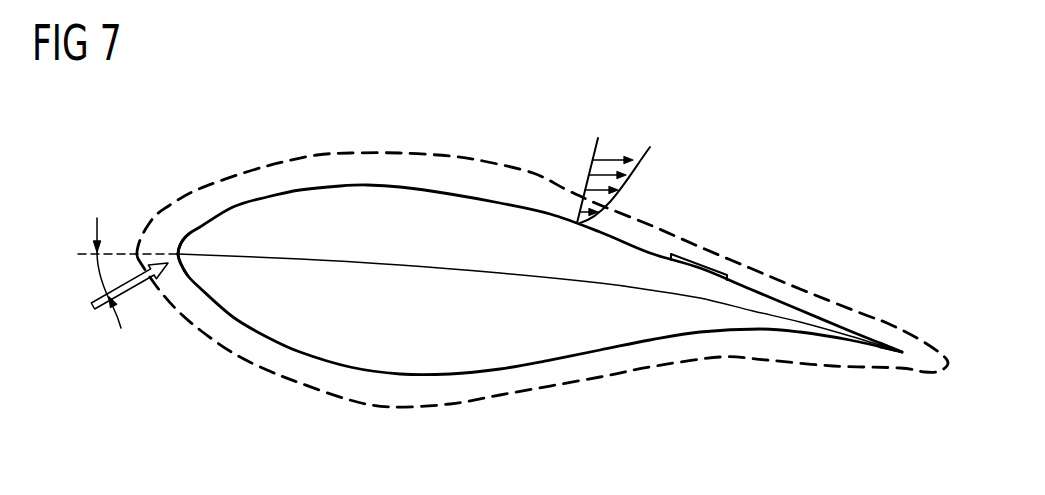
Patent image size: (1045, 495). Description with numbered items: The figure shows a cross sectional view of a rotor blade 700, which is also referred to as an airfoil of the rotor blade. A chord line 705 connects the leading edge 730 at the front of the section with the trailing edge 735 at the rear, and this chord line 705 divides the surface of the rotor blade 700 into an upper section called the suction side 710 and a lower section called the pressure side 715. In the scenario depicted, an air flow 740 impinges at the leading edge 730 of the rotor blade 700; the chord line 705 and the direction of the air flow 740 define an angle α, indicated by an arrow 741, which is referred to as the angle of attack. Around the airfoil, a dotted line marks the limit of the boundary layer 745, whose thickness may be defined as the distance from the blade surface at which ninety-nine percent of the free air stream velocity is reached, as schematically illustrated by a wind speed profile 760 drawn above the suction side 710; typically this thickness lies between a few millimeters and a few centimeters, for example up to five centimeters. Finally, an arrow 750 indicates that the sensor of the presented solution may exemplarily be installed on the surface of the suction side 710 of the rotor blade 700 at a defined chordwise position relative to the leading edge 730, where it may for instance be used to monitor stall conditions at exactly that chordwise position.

The rotor blade 700 is at (524, 273).
The chord line 705 is at (540, 303).
The suction side 710 is at (540, 219).
The pressure side 715 is at (540, 357).
The leading edge 730 is at (141, 225).
The trailing edge 735 is at (918, 395).
The air flow 740 is at (146, 324).
The arrow indicating angle of attack 741 is at (101, 273).
The boundary layer 745 is at (542, 251).
The arrow indicating sensor position 750 is at (722, 233).
The wind speed profile 760 is at (633, 146).